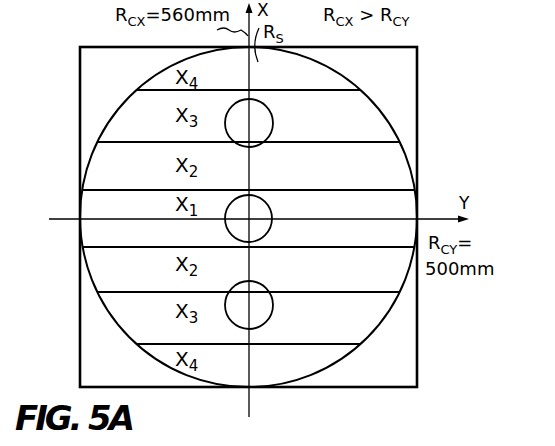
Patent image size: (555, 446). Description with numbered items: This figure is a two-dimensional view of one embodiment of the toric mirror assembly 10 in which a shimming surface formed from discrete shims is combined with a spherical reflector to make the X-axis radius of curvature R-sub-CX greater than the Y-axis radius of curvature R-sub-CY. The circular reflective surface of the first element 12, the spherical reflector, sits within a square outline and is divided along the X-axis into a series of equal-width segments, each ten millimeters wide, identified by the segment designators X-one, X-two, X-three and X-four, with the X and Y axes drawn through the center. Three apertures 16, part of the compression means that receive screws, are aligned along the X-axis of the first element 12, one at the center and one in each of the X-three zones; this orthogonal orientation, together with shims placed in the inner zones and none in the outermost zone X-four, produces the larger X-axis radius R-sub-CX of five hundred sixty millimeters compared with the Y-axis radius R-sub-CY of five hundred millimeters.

The square substrate 10 is at (98, 36).
The first element 12 is at (136, 78).
The apertures 16 is at (272, 116).